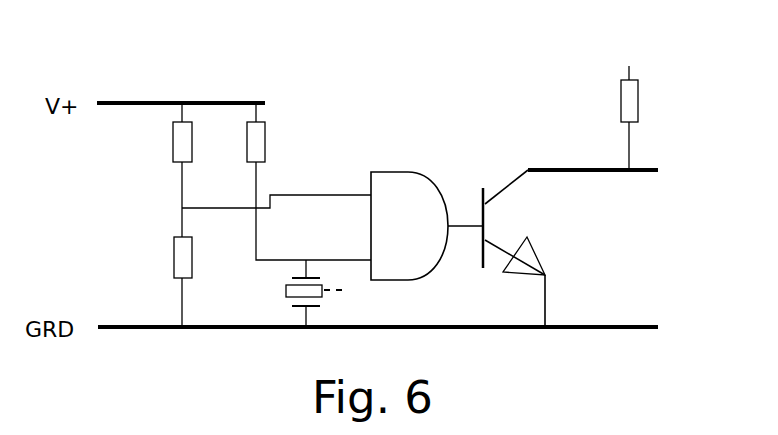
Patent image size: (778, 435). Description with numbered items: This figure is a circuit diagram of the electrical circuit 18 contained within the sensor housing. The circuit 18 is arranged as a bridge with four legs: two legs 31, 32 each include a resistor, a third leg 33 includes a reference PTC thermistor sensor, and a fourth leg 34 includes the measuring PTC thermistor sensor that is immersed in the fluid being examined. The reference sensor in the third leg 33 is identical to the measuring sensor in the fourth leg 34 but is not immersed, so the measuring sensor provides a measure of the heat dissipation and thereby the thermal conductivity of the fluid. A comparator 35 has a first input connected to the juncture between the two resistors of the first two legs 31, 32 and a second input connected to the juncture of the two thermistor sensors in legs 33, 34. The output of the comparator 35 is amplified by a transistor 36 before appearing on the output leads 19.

The electrical circuit 18 is at (416, 94).
The output leads 19 is at (658, 170).
The first leg of bridge 31 is at (182, 184).
The second leg of bridge 32 is at (182, 296).
The third leg of bridge 33 is at (265, 180).
The fourth leg of bridge 34 is at (262, 228).
The comparator 35 is at (410, 172).
The transistor 36 is at (508, 179).